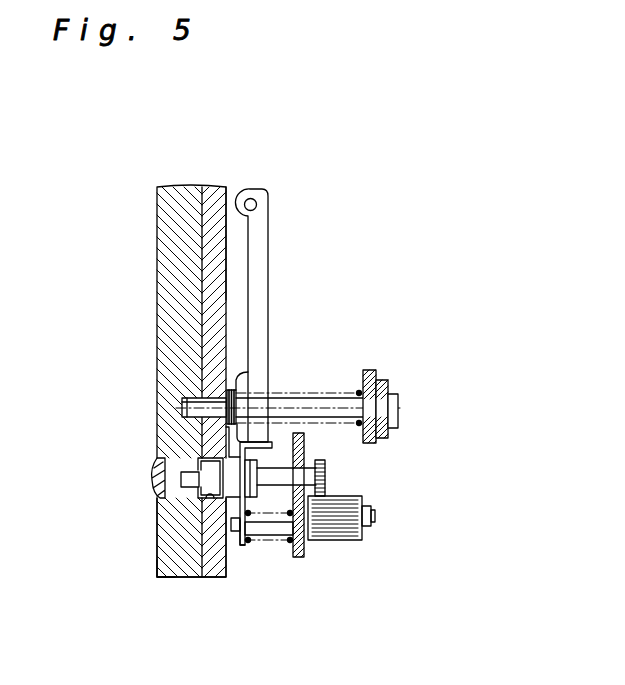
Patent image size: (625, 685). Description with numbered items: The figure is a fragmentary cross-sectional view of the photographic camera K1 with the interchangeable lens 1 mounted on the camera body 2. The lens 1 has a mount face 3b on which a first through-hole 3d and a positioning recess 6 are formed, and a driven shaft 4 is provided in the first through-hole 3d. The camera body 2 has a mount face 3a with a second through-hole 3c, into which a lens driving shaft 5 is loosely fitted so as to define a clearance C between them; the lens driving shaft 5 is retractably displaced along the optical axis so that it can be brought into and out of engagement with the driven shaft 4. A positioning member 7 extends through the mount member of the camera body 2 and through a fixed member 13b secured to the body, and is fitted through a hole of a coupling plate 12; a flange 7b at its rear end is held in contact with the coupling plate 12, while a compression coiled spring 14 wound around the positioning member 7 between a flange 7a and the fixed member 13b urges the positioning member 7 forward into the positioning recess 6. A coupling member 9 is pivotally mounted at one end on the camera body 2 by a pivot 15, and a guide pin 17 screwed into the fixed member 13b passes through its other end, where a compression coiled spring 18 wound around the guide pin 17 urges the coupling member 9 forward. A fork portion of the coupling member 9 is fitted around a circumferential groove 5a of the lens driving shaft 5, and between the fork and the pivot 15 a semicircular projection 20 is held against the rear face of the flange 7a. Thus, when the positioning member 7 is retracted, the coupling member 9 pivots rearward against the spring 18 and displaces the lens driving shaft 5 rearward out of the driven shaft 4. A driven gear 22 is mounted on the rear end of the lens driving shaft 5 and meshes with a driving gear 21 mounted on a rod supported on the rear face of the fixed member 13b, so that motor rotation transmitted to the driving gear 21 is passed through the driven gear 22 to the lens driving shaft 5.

The interchangeable lens 1 is at (155, 578).
The camera body 2 is at (203, 578).
The mount face 3a is at (200, 264).
The mount face 3b is at (212, 297).
The second through-hole 3c is at (205, 508).
The first through-hole 3d is at (153, 471).
The driven shaft 4 is at (178, 482).
The lens driving shaft 5 is at (197, 444).
The circumferential groove 5a is at (333, 540).
The positioning recess 6 is at (181, 412).
The positioning member 7 is at (322, 395).
The flange 7a is at (181, 402).
The flange 7b is at (399, 406).
The coupling member 9 is at (269, 299).
The coupling plate 12 is at (385, 432).
The fixed member 13b is at (366, 372).
The compression coiled spring 14 is at (360, 426).
The pivot 15 is at (257, 200).
The guide pin 17 is at (254, 527).
The compression coiled spring 18 is at (270, 527).
The semicircular projection 20 is at (243, 378).
The driving gear 21 is at (360, 534).
The driven gear 22 is at (252, 476).
The clearance C is at (232, 546).
The photographic camera K1 is at (356, 254).